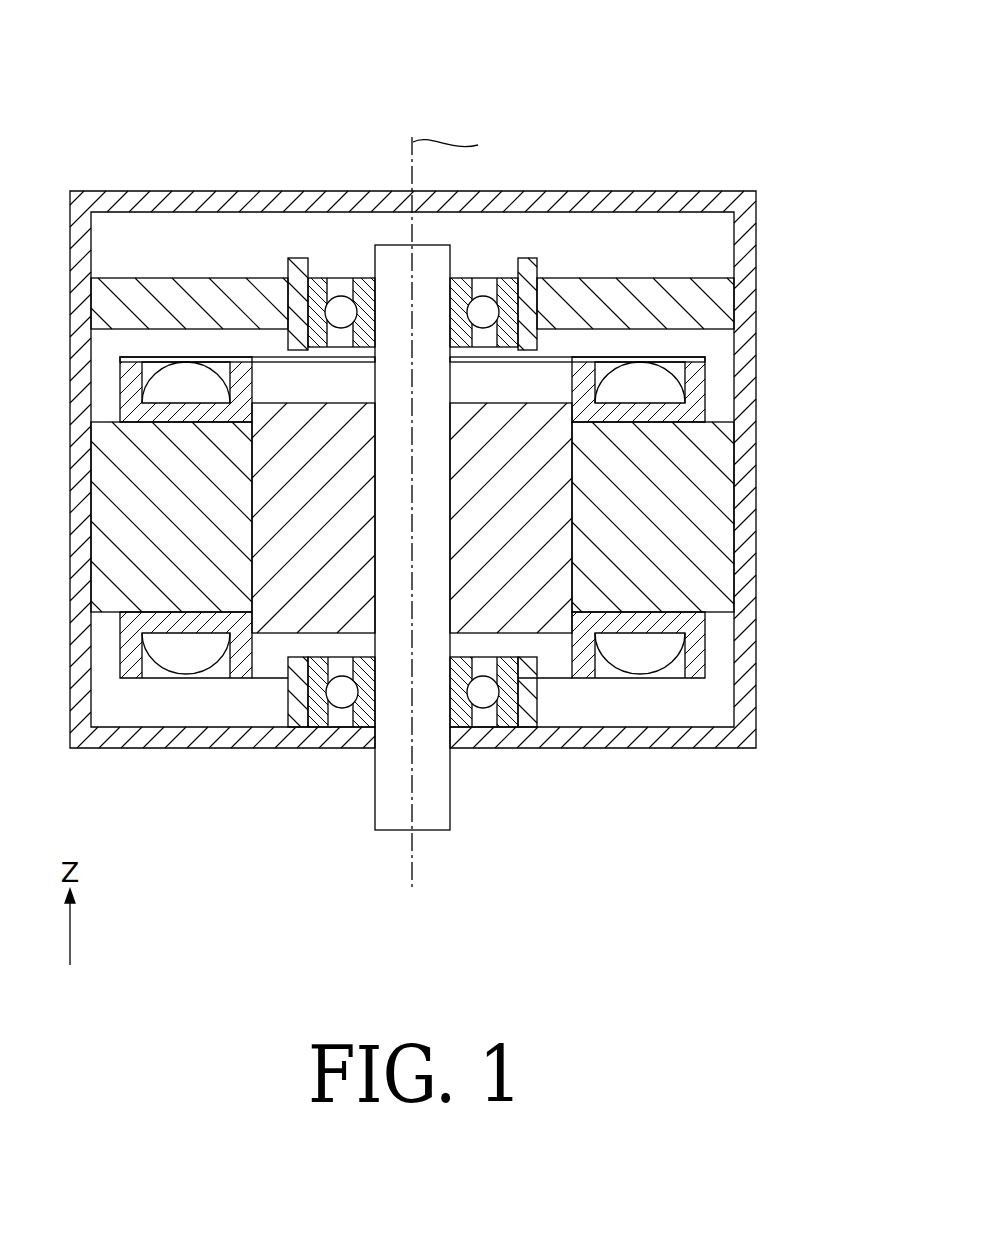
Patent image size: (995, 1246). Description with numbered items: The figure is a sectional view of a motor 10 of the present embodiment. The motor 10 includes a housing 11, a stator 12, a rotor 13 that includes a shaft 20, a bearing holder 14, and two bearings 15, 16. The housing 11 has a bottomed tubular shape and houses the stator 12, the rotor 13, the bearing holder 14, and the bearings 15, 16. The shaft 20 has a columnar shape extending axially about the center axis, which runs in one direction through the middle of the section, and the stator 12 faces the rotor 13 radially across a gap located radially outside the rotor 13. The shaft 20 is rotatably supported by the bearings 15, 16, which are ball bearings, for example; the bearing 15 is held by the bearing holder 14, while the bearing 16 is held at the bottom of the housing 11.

The motor 10 is at (452, 443).
The housing 11 is at (687, 192).
The stator 12 is at (716, 366).
The rotor 13 is at (533, 391).
The bearing holder 14 is at (210, 293).
The bearing 15 is at (341, 311).
The bearing 16 is at (340, 694).
The shaft 20 is at (433, 808).